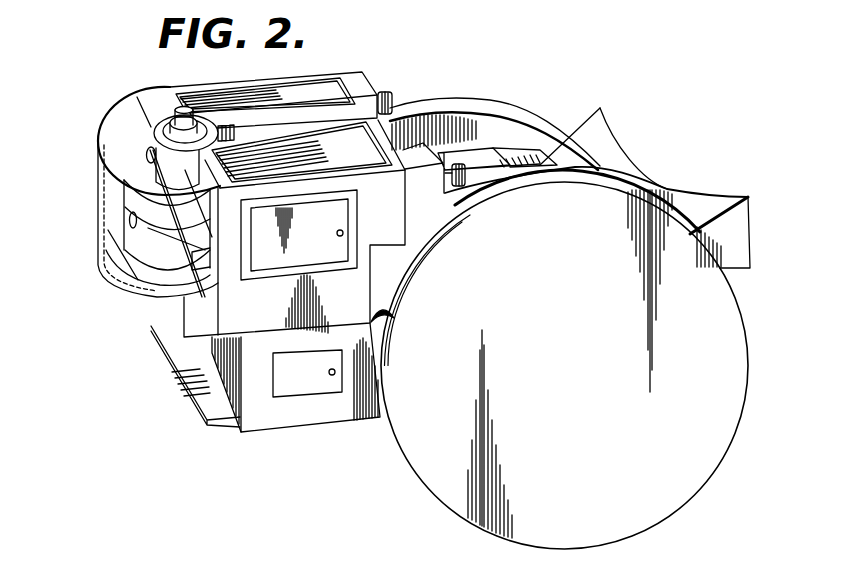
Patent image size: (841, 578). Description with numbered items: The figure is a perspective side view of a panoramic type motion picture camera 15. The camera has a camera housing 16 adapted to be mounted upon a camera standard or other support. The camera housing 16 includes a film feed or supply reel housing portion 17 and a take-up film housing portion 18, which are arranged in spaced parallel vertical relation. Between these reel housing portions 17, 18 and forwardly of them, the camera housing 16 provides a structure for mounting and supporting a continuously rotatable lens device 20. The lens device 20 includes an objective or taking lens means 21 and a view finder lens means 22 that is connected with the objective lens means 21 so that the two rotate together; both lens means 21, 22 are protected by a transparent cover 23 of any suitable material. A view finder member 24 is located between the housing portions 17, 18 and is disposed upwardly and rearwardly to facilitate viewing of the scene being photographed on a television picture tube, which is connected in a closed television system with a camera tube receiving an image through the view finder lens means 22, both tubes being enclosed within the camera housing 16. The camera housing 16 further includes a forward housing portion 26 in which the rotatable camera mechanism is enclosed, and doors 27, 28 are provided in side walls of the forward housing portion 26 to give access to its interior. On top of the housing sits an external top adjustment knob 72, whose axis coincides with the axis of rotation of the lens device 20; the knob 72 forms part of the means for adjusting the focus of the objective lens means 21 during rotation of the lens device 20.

The panoramic type motion picture camera 15 is at (399, 92).
The camera housing 16 is at (305, 428).
The film feed or supply reel housing portion 17 is at (576, 368).
The take-up film housing portion 18 is at (506, 108).
The continuously rotatable lens device 20 is at (153, 124).
The objective or taking lens means 21 is at (147, 152).
The view finder lens means 22 is at (129, 222).
The transparent cover 23 is at (107, 268).
The view finder member 24 is at (666, 188).
The forward housing portion 26 is at (288, 68).
The door 27 is at (308, 253).
The door 28 is at (312, 389).
The external top adjustment knob 72 is at (188, 112).